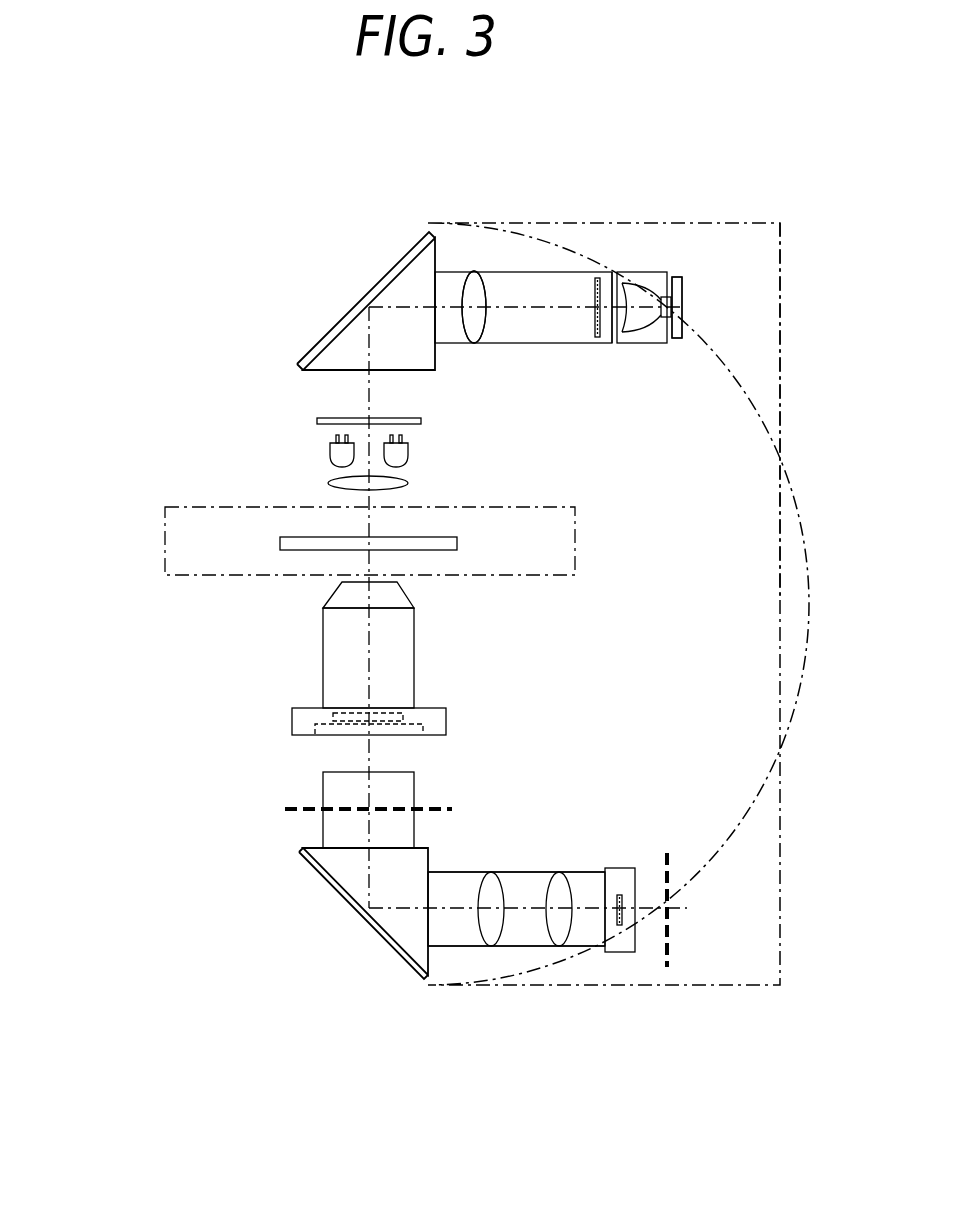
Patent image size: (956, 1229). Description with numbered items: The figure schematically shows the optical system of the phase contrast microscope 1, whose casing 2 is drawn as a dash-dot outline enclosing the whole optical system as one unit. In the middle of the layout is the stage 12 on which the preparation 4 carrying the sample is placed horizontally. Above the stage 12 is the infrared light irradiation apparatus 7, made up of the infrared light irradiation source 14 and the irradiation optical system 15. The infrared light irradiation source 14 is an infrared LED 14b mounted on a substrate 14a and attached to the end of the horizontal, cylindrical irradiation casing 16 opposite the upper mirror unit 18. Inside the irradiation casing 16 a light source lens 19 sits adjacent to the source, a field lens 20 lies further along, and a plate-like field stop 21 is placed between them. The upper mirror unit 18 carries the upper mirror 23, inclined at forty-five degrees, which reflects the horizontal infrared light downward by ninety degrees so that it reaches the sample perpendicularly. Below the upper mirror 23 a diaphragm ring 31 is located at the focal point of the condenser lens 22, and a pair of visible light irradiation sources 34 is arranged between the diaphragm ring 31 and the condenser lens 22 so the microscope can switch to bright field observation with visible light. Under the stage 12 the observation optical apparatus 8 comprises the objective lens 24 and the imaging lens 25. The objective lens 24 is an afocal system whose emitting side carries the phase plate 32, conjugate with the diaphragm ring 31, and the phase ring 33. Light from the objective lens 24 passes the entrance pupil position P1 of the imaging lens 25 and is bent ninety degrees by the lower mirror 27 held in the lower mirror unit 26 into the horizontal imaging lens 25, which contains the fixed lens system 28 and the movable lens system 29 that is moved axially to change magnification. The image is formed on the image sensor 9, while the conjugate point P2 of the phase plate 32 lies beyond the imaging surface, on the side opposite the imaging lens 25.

The phase contrast microscope 1 is at (744, 222).
The casing 2 is at (781, 224).
The preparation 4 is at (446, 536).
The infrared light irradiation apparatus 7 is at (518, 272).
The observation optical apparatus 8 is at (528, 947).
The image sensor 9 is at (620, 894).
The stage 12 is at (577, 536).
The infrared light irradiation source 14 is at (679, 277).
The substrate 14a is at (682, 330).
The infrared LED 14b is at (662, 300).
The irradiation optical system 15 is at (477, 259).
The irradiation casing 16 is at (560, 270).
The upper mirror unit 18 is at (408, 354).
The light source lens 19 is at (636, 326).
The field lens 20 is at (478, 318).
The field stop 21 is at (596, 328).
The condenser lens 22 is at (332, 483).
The upper mirror 23 is at (387, 283).
The objective lens 24 is at (400, 664).
The imaging lens 25 is at (518, 872).
The lower mirror unit 26 is at (342, 862).
The lower mirror 27 is at (342, 895).
The fixed lens system 28 is at (493, 885).
The movable lens system 29 is at (563, 890).
The diaphragm ring 31 is at (330, 415).
The phase plate 32 is at (332, 738).
The phase ring 33 is at (408, 717).
The visible light irradiation sources 34 is at (330, 452).
The entrance pupil position P1 is at (424, 806).
The conjugate point P2 is at (670, 880).